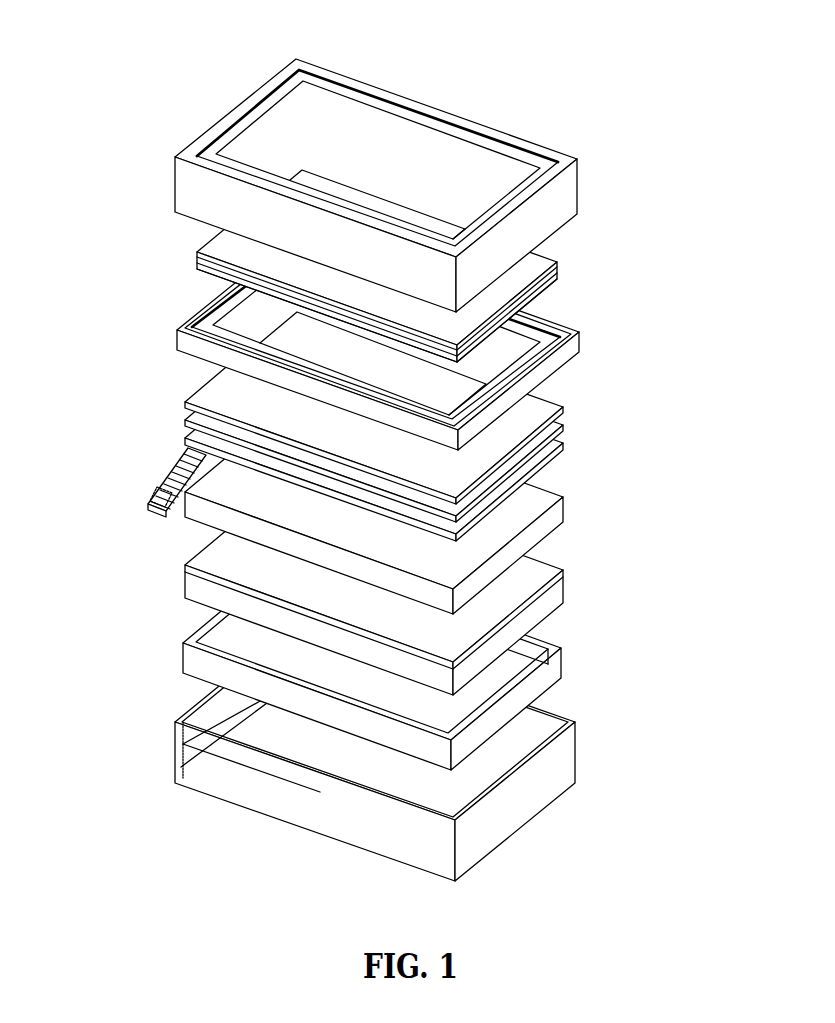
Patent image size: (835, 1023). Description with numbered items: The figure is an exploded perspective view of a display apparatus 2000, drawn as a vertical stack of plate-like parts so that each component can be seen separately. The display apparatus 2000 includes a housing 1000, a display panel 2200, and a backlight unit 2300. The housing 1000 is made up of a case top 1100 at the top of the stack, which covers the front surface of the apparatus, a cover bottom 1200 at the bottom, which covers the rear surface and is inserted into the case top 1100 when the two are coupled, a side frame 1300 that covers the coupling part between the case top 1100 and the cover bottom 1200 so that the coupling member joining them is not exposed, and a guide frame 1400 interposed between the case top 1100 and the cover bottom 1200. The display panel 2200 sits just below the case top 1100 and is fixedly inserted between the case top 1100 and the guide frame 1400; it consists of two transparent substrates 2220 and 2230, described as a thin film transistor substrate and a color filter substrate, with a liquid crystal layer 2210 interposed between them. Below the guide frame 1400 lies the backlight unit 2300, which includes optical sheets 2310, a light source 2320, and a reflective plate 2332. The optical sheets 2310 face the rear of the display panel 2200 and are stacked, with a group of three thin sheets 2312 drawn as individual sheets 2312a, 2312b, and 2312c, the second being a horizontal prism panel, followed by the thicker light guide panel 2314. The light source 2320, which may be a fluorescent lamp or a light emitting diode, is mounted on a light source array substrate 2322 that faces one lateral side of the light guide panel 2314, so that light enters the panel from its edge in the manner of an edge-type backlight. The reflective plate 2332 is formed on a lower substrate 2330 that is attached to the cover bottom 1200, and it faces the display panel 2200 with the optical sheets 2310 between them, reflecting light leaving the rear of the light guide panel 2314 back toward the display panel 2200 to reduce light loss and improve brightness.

The housing 1000 is at (77, 752).
The case top 1100 is at (193, 184).
The cover bottom 1200 is at (177, 779).
The side frame 1300 is at (192, 670).
The guide frame 1400 is at (188, 345).
The display apparatus 2000 is at (607, 25).
The display panel 2200 is at (453, 265).
The liquid crystal layer 2210 is at (557, 268).
The transparent substrate 2220 is at (557, 262).
The transparent substrate 2230 is at (557, 276).
The backlight unit 2300 is at (492, 503).
The optical sheets 2310 is at (463, 462).
The optical sheets 2312 is at (437, 426).
The first optical sheet 2312a is at (563, 410).
The horizontal prism panel 2312b is at (563, 429).
The third optical sheet 2312c is at (563, 449).
The light guide panel 2314 is at (558, 517).
The light source 2320 is at (157, 503).
The light source array substrate 2322 is at (158, 501).
The lower substrate 2330 is at (461, 584).
The reflective plate 2332 is at (567, 572).